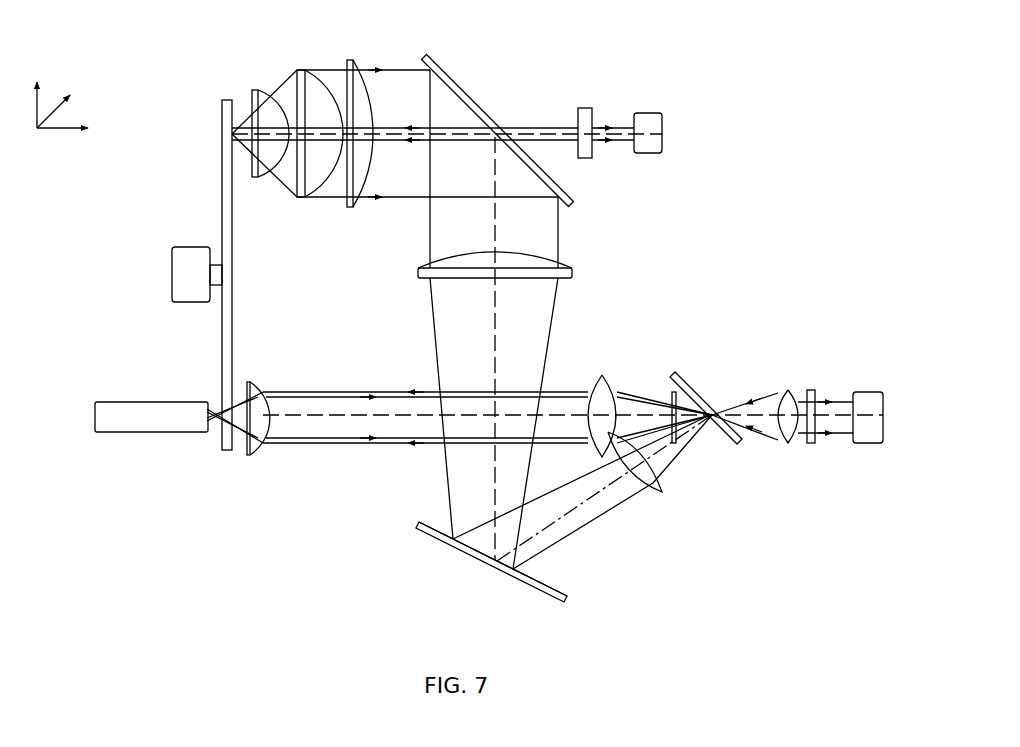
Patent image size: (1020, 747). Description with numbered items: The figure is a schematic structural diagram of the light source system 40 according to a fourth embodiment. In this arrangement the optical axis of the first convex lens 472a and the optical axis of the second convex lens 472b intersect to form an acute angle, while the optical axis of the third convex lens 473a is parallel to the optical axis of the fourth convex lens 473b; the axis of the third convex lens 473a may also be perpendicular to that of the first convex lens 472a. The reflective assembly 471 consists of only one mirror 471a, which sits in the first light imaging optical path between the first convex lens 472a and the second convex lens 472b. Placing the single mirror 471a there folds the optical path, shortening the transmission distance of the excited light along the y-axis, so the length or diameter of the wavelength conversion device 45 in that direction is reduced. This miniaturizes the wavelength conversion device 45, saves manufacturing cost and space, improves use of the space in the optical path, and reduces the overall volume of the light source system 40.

The light source system 40 is at (94, 23).
The wavelength conversion device 45 is at (221, 133).
The reflective assembly 471 is at (586, 598).
The mirror 471a is at (481, 557).
The first convex lens 472a is at (574, 272).
The second convex lens 472b is at (656, 486).
The third convex lens 473a is at (600, 378).
The fourth convex lens 473b is at (258, 452).